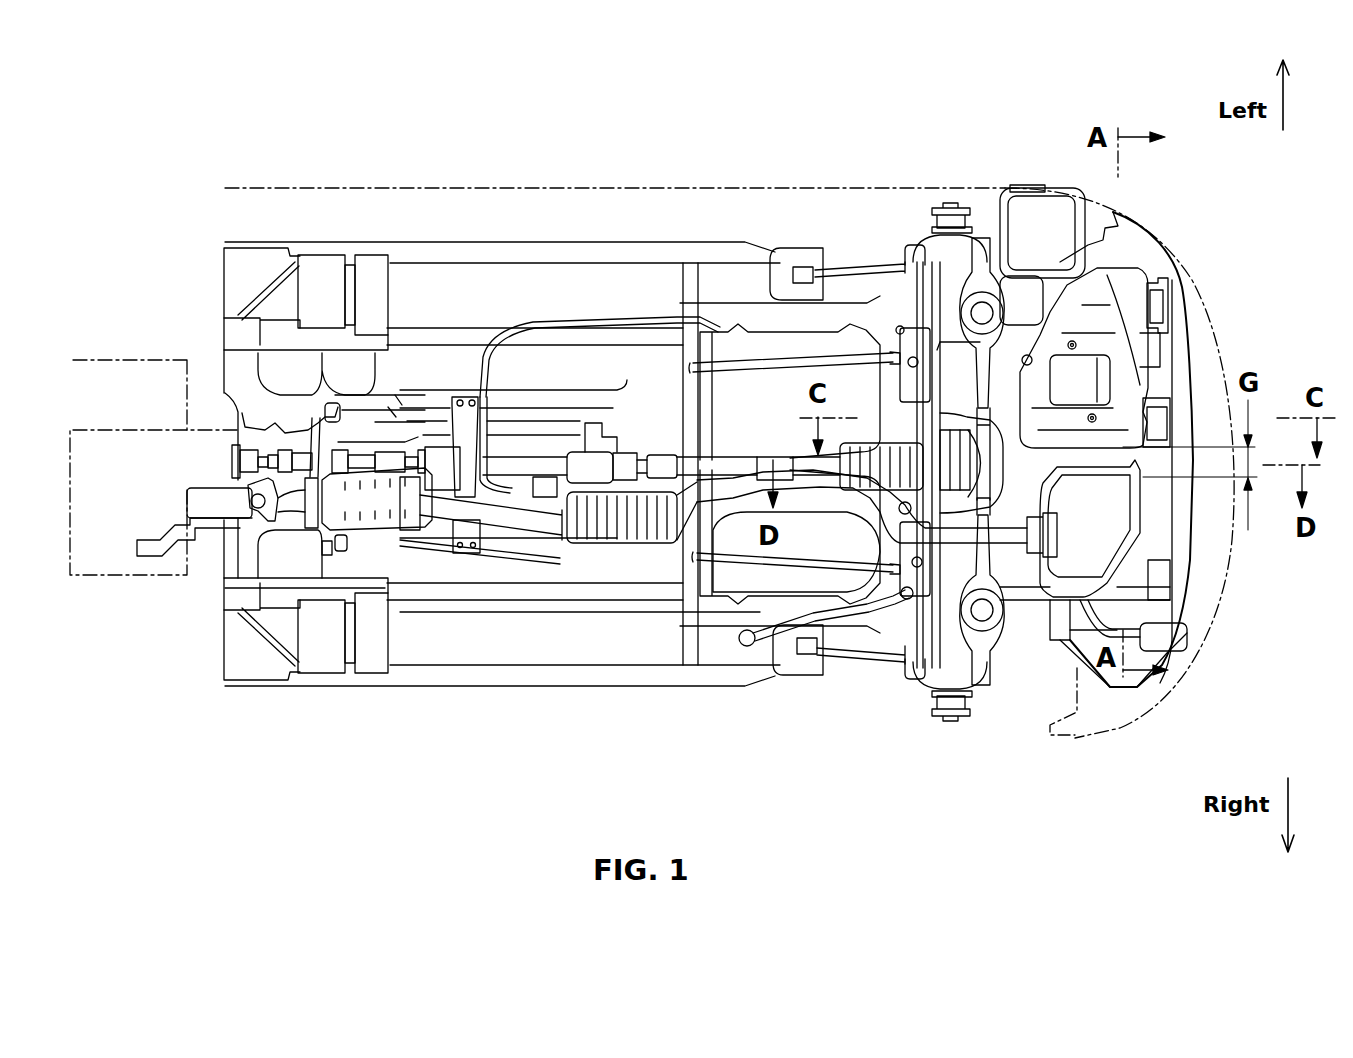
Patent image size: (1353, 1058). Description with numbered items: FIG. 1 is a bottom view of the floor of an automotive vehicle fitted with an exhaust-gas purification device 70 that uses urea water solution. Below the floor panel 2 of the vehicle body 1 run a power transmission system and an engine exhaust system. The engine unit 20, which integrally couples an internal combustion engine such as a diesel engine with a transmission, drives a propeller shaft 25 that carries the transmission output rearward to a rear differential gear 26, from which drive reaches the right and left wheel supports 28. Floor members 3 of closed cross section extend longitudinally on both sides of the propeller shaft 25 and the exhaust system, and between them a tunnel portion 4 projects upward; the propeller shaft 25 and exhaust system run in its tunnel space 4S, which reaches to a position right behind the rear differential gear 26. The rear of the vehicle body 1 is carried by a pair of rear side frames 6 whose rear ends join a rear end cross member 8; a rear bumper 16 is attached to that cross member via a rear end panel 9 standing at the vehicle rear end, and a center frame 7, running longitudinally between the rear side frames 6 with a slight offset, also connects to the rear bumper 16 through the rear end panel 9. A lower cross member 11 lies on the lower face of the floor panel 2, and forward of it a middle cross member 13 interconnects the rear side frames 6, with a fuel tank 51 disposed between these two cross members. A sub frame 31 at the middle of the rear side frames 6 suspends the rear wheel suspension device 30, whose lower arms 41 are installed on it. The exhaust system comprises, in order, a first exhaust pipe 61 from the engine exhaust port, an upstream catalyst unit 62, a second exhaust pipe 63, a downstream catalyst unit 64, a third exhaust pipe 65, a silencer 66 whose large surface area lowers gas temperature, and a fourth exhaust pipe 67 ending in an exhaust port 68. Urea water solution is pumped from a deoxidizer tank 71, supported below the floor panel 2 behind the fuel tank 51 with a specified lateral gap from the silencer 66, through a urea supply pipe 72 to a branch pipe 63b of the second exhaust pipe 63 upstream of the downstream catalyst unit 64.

The vehicle body 1 is at (808, 175).
The floor panel 2 is at (846, 262).
The floor member 3 is at (387, 417).
The tunnel portion 4 is at (400, 400).
The tunnel space 4S is at (395, 417).
The rear side frame 6 is at (1163, 310).
The center frame 7 is at (1163, 423).
The rear end cross member 8 is at (1187, 520).
The rear end panel 9 is at (1180, 583).
The lower cross member 11 is at (882, 640).
The middle cross member 13 is at (683, 300).
The rear bumper 16 is at (1220, 290).
The engine unit 20 is at (150, 350).
The propeller shaft 25 is at (500, 400).
The rear differential gear 26 is at (865, 640).
The wheel support 28 is at (937, 200).
The rear wheel suspension device 30 is at (988, 188).
The sub frame 31 is at (1033, 650).
The lower arm 41 is at (1010, 650).
The fuel tank 51 is at (765, 345).
The first exhaust pipe 61 is at (233, 520).
The upstream catalyst unit 62 is at (400, 523).
The second exhaust pipe 63 is at (520, 547).
The branch pipe 63b is at (560, 550).
The downstream catalyst unit 64 is at (610, 545).
The third exhaust pipe 65 is at (735, 545).
The silencer 66 is at (1140, 537).
The fourth exhaust pipe 67 is at (1173, 657).
The exhaust port 68 is at (1190, 640).
The exhaust-gas purification device 70 is at (557, 575).
The deoxidizer tank 71 is at (1140, 367).
The urea supply pipe 72 is at (567, 317).